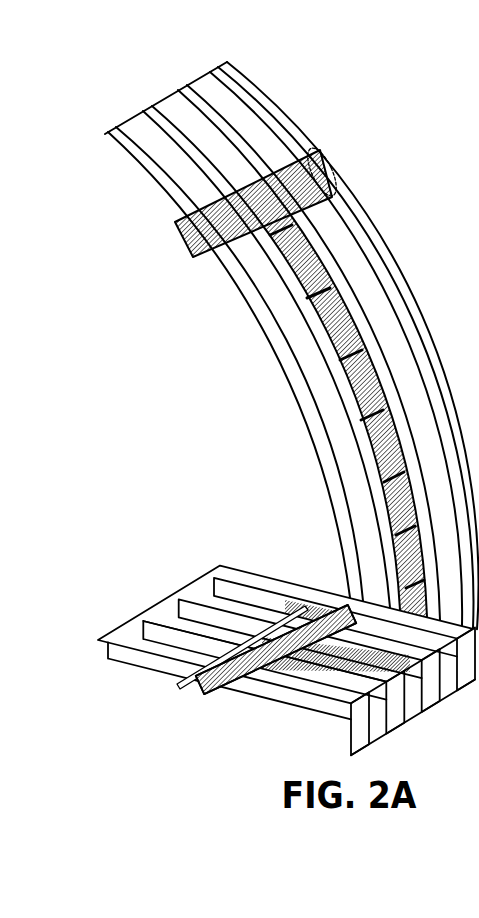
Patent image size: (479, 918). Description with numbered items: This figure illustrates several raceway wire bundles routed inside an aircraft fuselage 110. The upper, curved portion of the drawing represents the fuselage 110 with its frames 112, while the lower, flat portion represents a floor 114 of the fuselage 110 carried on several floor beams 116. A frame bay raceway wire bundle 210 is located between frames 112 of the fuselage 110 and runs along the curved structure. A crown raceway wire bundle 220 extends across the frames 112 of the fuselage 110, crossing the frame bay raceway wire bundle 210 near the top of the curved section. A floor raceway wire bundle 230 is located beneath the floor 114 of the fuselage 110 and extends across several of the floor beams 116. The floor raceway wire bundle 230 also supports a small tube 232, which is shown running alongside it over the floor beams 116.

The aircraft fuselage 110 is at (274, 350).
The frames 112 is at (182, 100).
The floor 114 is at (275, 639).
The floor beams 116 is at (165, 630).
The frame bay raceway wire bundle 210 is at (290, 263).
The crown raceway wire bundle 220 is at (182, 245).
The floor raceway wire bundle 230 is at (220, 692).
The small tube 232 is at (177, 685).